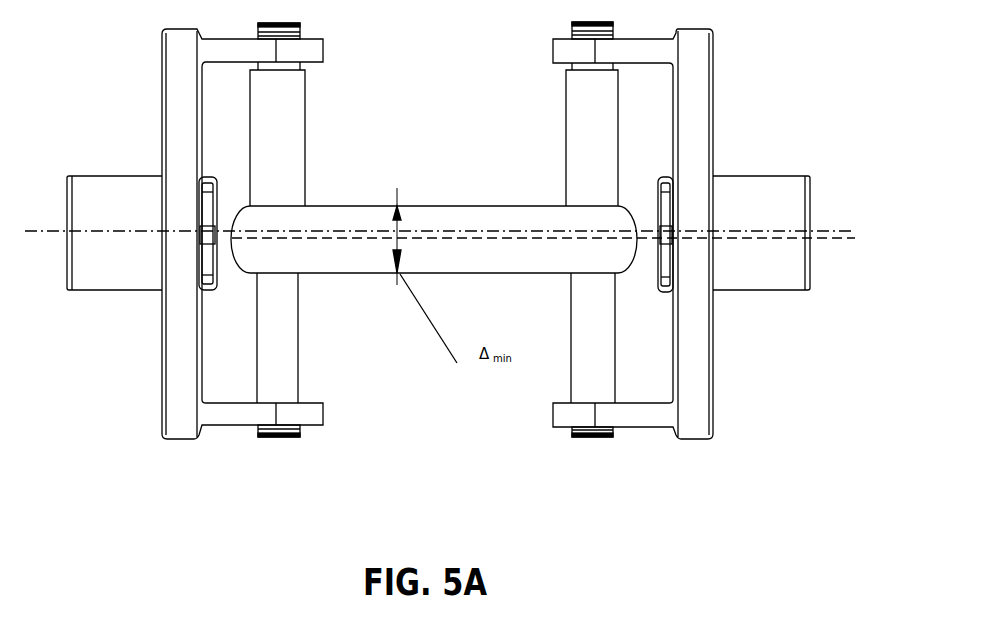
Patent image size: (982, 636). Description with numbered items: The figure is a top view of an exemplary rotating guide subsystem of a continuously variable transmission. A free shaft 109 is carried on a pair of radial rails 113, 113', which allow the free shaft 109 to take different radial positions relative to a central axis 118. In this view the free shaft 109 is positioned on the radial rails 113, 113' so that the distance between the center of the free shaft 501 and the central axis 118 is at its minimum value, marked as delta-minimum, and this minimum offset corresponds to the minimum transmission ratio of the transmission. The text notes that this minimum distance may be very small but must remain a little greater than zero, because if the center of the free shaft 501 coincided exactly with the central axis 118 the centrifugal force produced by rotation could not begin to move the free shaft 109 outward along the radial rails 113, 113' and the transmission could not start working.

The central axis 118 is at (34, 232).
The radial rail 113 is at (337, 246).
The radial rail 113' is at (530, 255).
The free shaft 109 is at (457, 206).
The center of the free shaft 501 is at (330, 239).